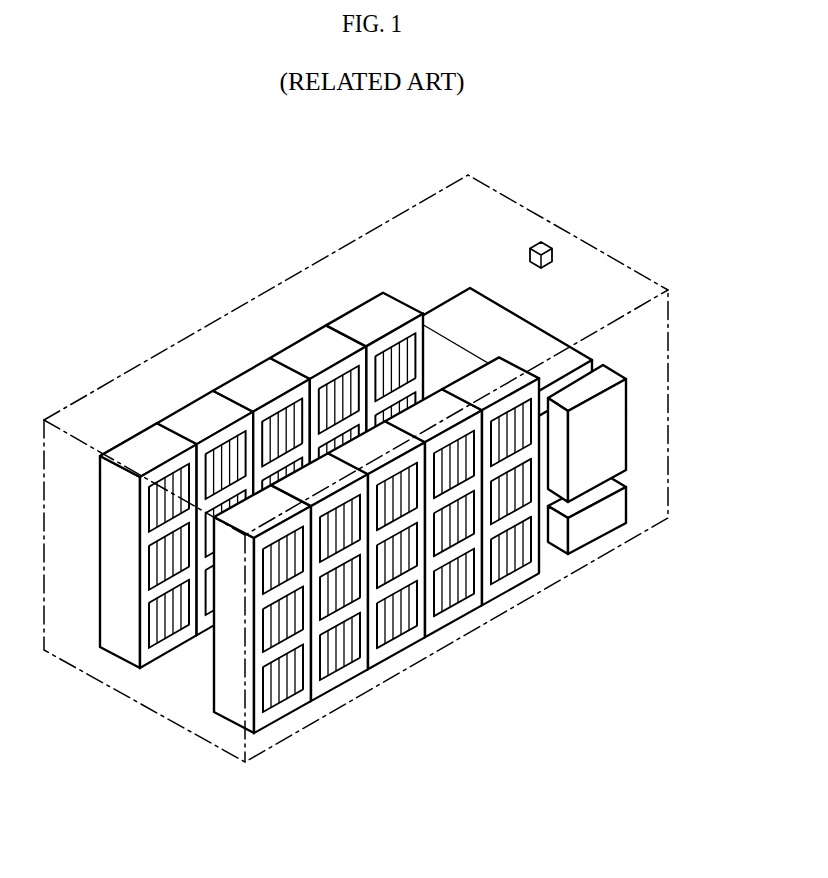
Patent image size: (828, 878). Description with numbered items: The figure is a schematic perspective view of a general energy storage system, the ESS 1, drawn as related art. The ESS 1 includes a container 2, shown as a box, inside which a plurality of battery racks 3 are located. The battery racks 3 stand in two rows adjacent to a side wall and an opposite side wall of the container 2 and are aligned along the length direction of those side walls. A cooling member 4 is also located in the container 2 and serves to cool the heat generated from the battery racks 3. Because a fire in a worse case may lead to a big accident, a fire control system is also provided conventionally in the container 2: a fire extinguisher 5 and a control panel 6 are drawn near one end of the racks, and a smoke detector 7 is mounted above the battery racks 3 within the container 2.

The ESS 1 is at (108, 155).
The container 2 is at (288, 269).
The battery racks 3 is at (401, 513).
The cooling member 4 is at (547, 342).
The fire extinguisher 5 is at (618, 417).
The control panel 6 is at (618, 505).
The smoke detector 7 is at (546, 241).